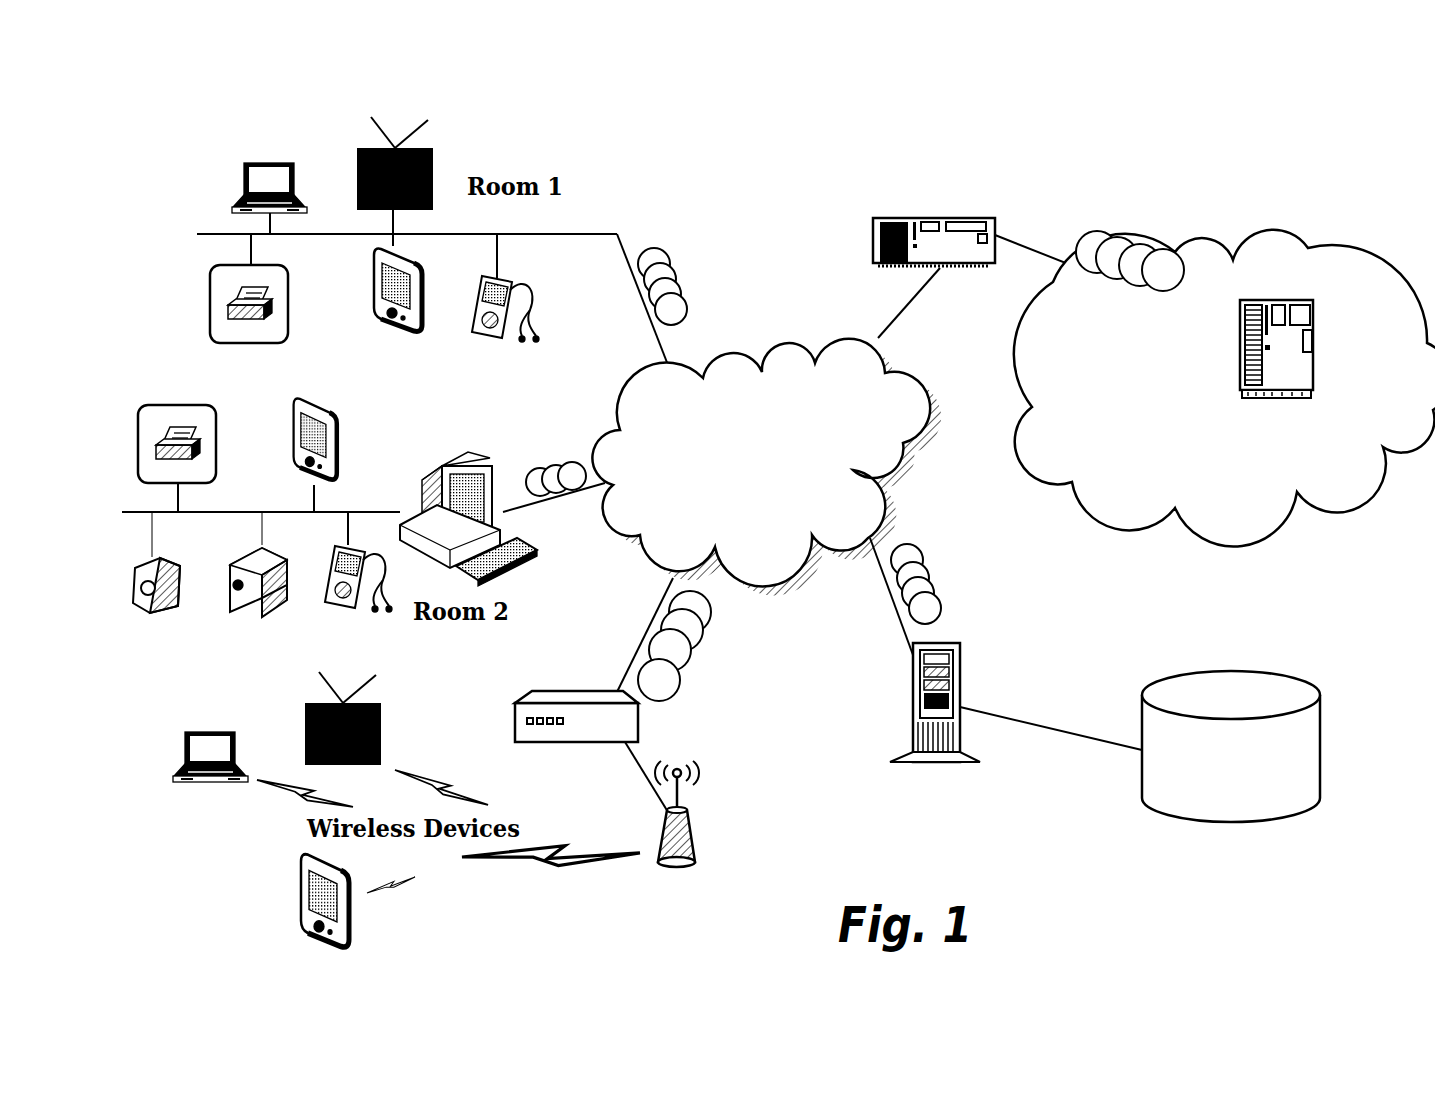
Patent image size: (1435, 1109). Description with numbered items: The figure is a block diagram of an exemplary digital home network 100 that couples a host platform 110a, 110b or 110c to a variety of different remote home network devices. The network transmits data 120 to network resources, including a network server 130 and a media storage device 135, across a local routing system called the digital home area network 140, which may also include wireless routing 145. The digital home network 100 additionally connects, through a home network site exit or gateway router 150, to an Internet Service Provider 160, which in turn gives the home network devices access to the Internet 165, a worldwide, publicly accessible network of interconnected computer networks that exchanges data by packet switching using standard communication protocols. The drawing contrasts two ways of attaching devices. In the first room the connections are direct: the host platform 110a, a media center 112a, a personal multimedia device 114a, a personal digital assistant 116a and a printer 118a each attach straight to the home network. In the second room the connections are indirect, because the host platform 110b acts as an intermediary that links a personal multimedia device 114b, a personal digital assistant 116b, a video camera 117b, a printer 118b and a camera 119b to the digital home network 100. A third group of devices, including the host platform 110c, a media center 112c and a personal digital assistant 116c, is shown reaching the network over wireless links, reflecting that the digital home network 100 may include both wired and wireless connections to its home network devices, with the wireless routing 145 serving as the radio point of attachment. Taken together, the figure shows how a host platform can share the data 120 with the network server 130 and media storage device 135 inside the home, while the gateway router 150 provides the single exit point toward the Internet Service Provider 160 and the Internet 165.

The digital home network 100 is at (762, 170).
The host platform 110a is at (258, 162).
The host platform 110b is at (422, 470).
The host platform 110c is at (186, 752).
The media center 112a is at (436, 148).
The television (wireless) 112c is at (421, 718).
The personal multimedia device 114a is at (498, 340).
The personal multimedia device 114b is at (362, 602).
The personal digital assistant 116a is at (372, 286).
The personal digital assistant 116b is at (325, 410).
The handheld device / PDA (wireless) 116c is at (312, 940).
The video camera 117b is at (262, 616).
The printer 118a is at (210, 292).
The printer 118b is at (218, 440).
The camera 119b is at (148, 616).
The data 120 is at (677, 272).
The network server 130 is at (960, 690).
The media storage device 135 is at (1252, 781).
The digital home area network 140 is at (767, 512).
The wireless routing 145 is at (703, 845).
The home network site exit router 150 is at (873, 226).
The ISP server 160 is at (1313, 340).
The Internet 165 is at (1165, 477).